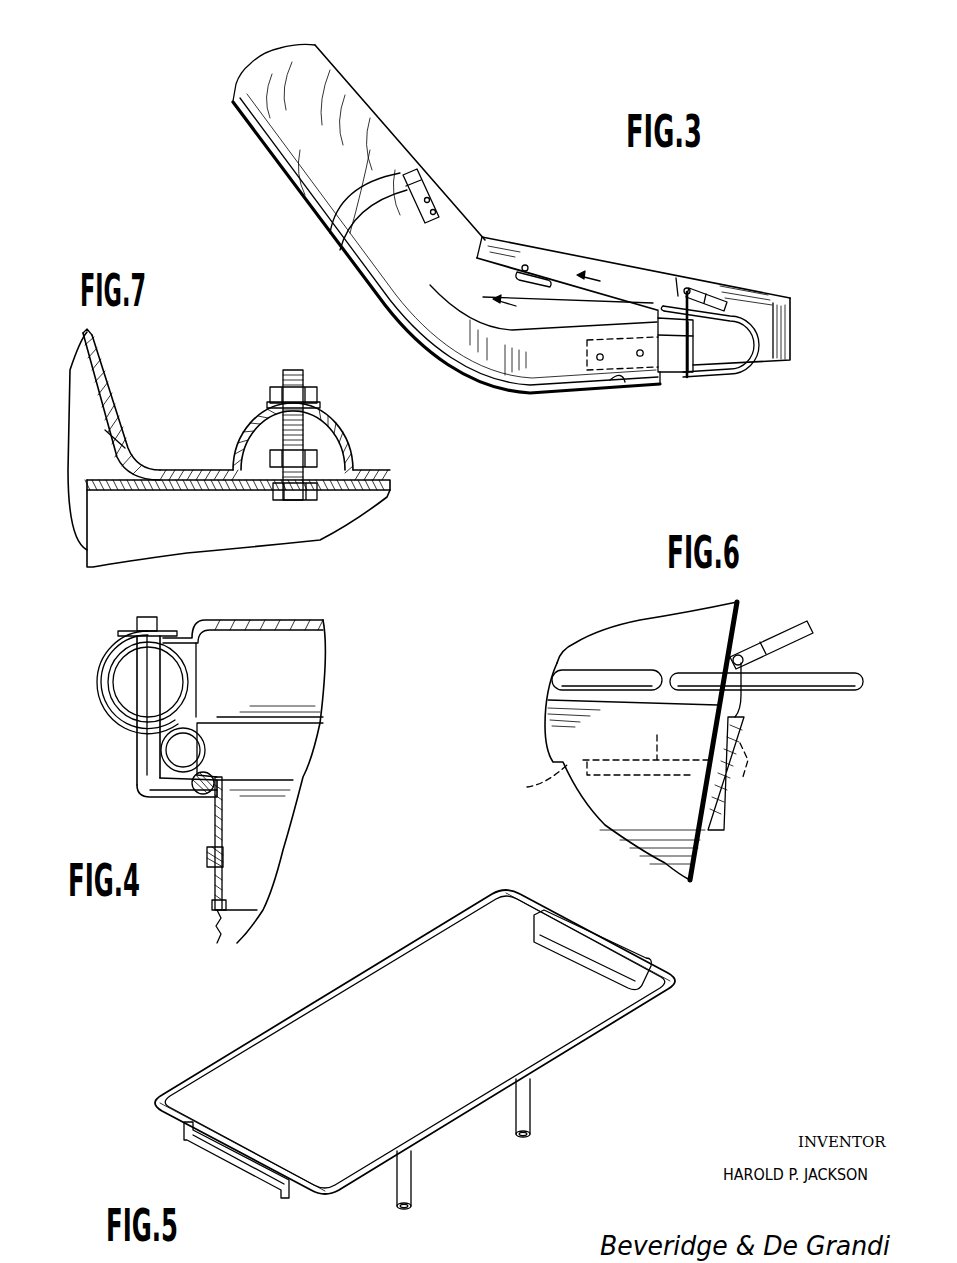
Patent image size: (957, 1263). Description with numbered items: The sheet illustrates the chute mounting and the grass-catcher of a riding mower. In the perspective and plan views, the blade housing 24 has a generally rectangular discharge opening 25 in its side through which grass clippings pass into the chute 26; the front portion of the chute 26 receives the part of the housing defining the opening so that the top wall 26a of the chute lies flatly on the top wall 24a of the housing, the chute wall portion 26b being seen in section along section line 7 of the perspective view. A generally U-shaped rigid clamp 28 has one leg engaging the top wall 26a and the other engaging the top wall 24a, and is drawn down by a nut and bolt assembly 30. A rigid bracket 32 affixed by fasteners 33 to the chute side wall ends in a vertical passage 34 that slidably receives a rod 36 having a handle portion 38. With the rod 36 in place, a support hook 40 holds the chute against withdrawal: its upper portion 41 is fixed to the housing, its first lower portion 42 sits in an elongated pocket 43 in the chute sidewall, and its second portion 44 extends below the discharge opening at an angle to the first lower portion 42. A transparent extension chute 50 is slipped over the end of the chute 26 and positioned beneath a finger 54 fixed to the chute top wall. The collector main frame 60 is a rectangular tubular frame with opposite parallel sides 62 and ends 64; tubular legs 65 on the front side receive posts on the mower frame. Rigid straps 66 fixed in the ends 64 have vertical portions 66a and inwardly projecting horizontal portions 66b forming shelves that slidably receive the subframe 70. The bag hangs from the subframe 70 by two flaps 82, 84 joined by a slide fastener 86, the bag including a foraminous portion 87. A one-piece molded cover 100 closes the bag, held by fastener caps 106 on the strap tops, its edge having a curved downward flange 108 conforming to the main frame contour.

In FIG. 3, the section line 7— 7 is at (554, 295).
In FIG. 3, the blade housing 24 is at (793, 308).
In FIG. 7, the blade housing 24 is at (200, 493).
In FIG. 3, the top wall of blade housing 24a is at (640, 268).
In FIG. 7, the top wall of blade housing 24a is at (375, 473).
In FIG. 6, the top wall of blade housing 24a is at (740, 603).
In FIG. 7, the discharge opening 25 is at (75, 520).
In FIG. 6, the discharge opening 25 is at (537, 782).
In FIG. 3, the chute 26 is at (505, 389).
In FIG. 7, the chute 26 is at (123, 443).
In FIG. 7, the top wall of chute 26a is at (176, 470).
In FIG. 6, the top wall of chute 26a is at (563, 717).
In FIG. 3, the upright portion of tube 26b is at (363, 280).
In FIG. 7, the upright portion of tube 26b is at (99, 380).
In FIG. 3, the clamp 28 is at (537, 270).
In FIG. 7, the clamp 28 is at (340, 420).
In FIG. 7, the nut and bolt assembly 30 is at (305, 392).
In FIG. 3, the bracket 32 is at (664, 363).
In FIG. 3, the fasteners 33 is at (588, 348).
In FIG. 3, the vertical passage 34 is at (693, 338).
In FIG. 3, the rod 36 is at (684, 288).
In FIG. 3, the handle portion 38 is at (728, 300).
In FIG. 6, the handle portion 38 is at (771, 645).
In FIG. 3, the support hook 40 is at (742, 380).
In FIG. 3, the upper portion of support hook 41 is at (676, 281).
In FIG. 6, the first lower portion of support hook 42 is at (740, 780).
In FIG. 3, the elongated pocket 43 is at (620, 388).
In FIG. 6, the elongated pocket 43 is at (728, 815).
In FIG. 6, the second portion of support hook 44 is at (658, 740).
In FIG. 3, the extension chute 50 is at (345, 84).
In FIG. 3, the finger 54 is at (420, 176).
In FIG. 5, the main frame 60 is at (684, 988).
In FIG. 5, the sides of main frame 62 is at (317, 991).
In FIG. 4, the ends of main frame 64 is at (188, 670).
In FIG. 5, the ends of main frame 64 is at (595, 935).
In FIG. 5, the tubular legs 65 is at (530, 1113).
In FIG. 5, the straps 66 is at (571, 971).
In FIG. 4, the vertical portions of straps 66a is at (137, 730).
In FIG. 4, the horizontal portions of straps 66b is at (152, 797).
In FIG. 4, the subframe 70 is at (207, 755).
In FIG. 4, the flap 82 is at (225, 830).
In FIG. 4, the flap 84 is at (214, 830).
In FIG. 4, the slide fastener 86 is at (207, 862).
In FIG. 4, the foraminous portion 87 is at (213, 920).
In FIG. 4, the cover 100 is at (285, 618).
In FIG. 4, the fastener caps 106 is at (160, 620).
In FIG. 4, the flange 108 is at (100, 660).